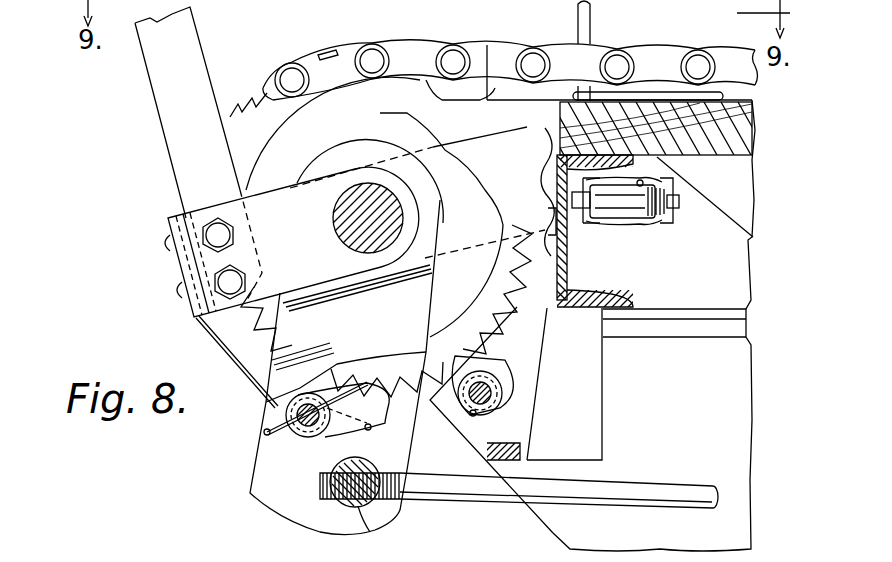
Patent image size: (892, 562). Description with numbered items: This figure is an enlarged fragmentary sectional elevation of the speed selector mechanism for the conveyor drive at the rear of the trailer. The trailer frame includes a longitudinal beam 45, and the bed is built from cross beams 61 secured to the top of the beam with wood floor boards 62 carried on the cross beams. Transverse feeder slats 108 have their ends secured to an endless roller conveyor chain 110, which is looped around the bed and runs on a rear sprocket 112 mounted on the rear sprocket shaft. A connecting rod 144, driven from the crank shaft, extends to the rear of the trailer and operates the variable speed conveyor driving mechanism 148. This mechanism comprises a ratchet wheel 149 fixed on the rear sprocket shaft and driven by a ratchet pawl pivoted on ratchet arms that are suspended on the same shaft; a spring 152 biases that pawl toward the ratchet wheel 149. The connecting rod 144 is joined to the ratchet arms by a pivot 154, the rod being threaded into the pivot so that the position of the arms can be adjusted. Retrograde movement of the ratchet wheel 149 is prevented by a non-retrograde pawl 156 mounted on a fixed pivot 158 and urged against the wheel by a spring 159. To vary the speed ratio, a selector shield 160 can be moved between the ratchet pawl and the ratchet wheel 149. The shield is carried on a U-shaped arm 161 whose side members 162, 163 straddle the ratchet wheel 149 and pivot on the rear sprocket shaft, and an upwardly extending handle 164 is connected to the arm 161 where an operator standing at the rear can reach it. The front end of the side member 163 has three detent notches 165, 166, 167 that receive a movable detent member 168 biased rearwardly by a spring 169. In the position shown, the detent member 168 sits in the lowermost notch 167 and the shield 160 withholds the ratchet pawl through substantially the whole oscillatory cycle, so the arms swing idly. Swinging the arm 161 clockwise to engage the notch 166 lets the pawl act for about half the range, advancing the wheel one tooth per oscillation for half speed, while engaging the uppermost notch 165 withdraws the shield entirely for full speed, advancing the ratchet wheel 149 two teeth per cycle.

The longitudinal beam 45 is at (565, 518).
The cross beam 61 is at (567, 288).
The floor board 62 is at (742, 112).
The feeder slat 108 is at (588, 36).
The conveyor chain 110 is at (676, 66).
The rear sprocket 112 is at (503, 62).
The connecting rod 144 is at (466, 497).
The variable speed conveyor driving mechanism 148 is at (155, 302).
The ratchet wheel 149 is at (567, 256).
The spring 152 is at (264, 432).
The pivot 154 is at (345, 380).
The non-retrograde pawl 156 is at (532, 345).
The fixed pivot 158 is at (502, 410).
The spring 159 is at (470, 418).
The selector shield 160 is at (268, 358).
The U-shaped arm 161 is at (172, 238).
The side member 162 is at (281, 200).
The side member 163 is at (462, 133).
The handle 164 is at (168, 100).
The detent notch 165 is at (558, 140).
The detent notch 166 is at (540, 176).
The detent notch 167 is at (547, 210).
The detent member 168 is at (492, 243).
The spring 169 is at (662, 220).